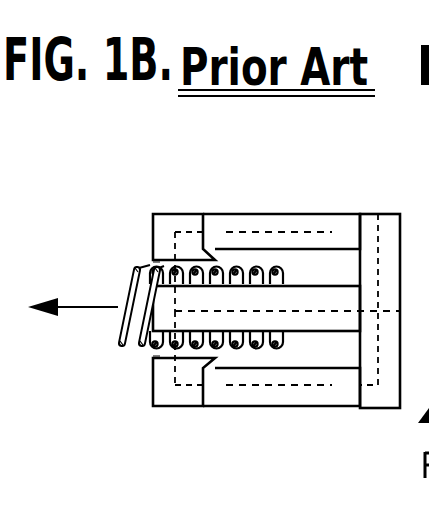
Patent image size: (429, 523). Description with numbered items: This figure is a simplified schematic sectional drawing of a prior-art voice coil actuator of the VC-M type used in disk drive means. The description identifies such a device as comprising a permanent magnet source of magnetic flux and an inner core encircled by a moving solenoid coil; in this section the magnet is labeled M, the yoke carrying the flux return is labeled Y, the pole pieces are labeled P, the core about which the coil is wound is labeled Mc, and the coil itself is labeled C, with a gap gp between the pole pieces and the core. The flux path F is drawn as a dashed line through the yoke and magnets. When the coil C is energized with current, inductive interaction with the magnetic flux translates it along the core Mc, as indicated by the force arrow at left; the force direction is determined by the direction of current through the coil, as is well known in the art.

The pole piece P is at (153, 222).
The permanent magnet M is at (297, 407).
The yoke Y is at (401, 306).
The magnetic core Mc is at (345, 290).
The force arrow F is at (378, 214).
The coil C is at (140, 352).
The gap gp is at (149, 266).